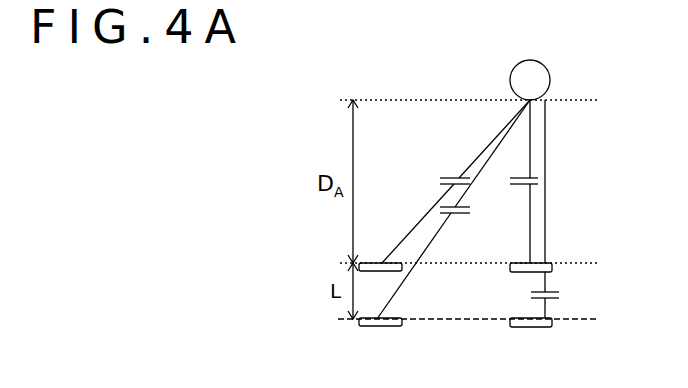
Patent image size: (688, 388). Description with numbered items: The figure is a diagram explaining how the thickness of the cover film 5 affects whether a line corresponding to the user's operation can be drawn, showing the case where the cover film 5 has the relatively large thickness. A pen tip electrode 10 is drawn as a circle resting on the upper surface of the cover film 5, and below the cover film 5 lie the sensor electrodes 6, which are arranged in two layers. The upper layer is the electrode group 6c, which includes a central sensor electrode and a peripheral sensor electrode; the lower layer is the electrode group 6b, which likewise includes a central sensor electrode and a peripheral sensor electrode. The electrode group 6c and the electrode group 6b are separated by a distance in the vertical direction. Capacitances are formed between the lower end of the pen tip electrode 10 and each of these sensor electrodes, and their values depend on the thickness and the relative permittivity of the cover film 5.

The pen tip electrode 10 is at (510, 80).
The cover film 5 is at (304, 100).
The sensor electrode group 6 is at (438, 308).
The electrode group 6c is at (553, 271).
The electrode group 6b is at (553, 326).